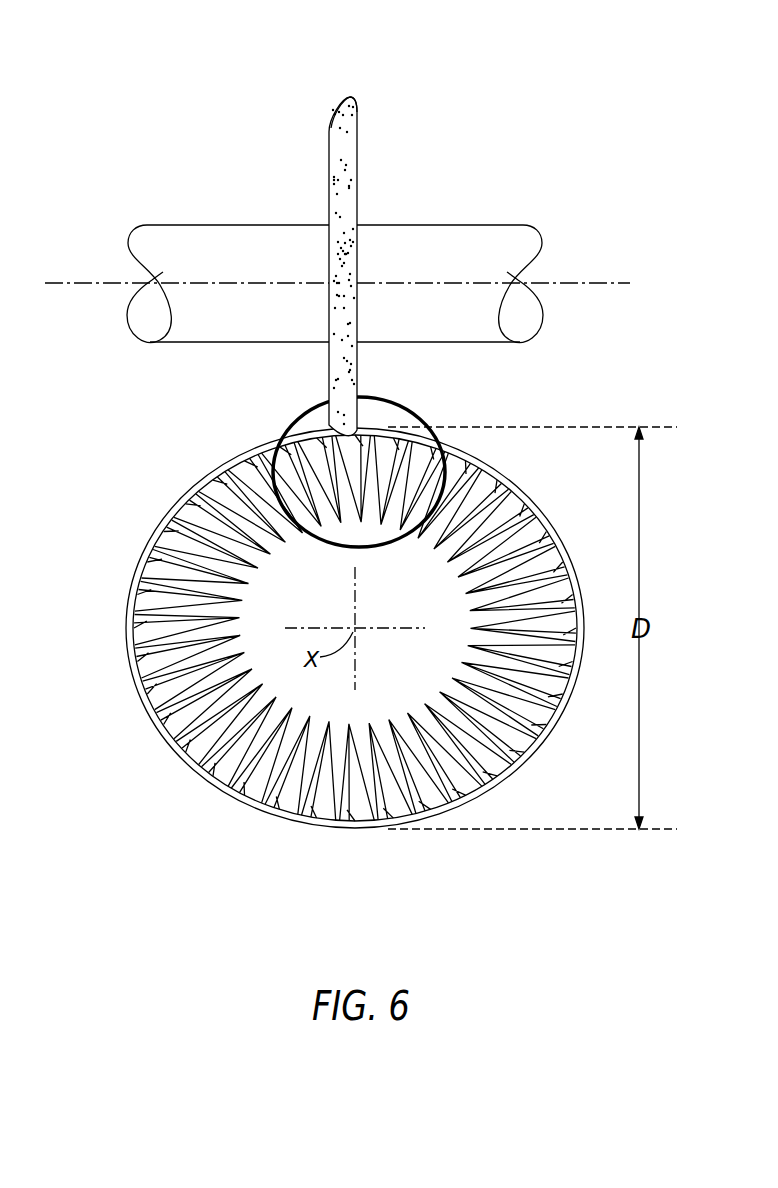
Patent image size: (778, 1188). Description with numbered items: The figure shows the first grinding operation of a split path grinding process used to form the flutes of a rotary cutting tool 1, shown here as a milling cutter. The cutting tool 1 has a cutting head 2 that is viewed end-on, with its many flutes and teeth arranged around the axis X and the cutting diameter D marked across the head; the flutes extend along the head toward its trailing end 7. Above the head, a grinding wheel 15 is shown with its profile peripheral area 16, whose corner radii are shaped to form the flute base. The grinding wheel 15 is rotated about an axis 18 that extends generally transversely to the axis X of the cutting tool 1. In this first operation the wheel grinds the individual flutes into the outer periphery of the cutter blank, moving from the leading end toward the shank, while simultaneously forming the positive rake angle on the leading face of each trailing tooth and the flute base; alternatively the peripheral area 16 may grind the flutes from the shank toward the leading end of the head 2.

The cutting tool 1 is at (231, 805).
The cutting head 2 is at (172, 574).
The trailing end 7 is at (418, 411).
The grinding wheel 15 is at (367, 163).
The profile peripheral area 16 is at (342, 110).
The axis 18 is at (604, 283).